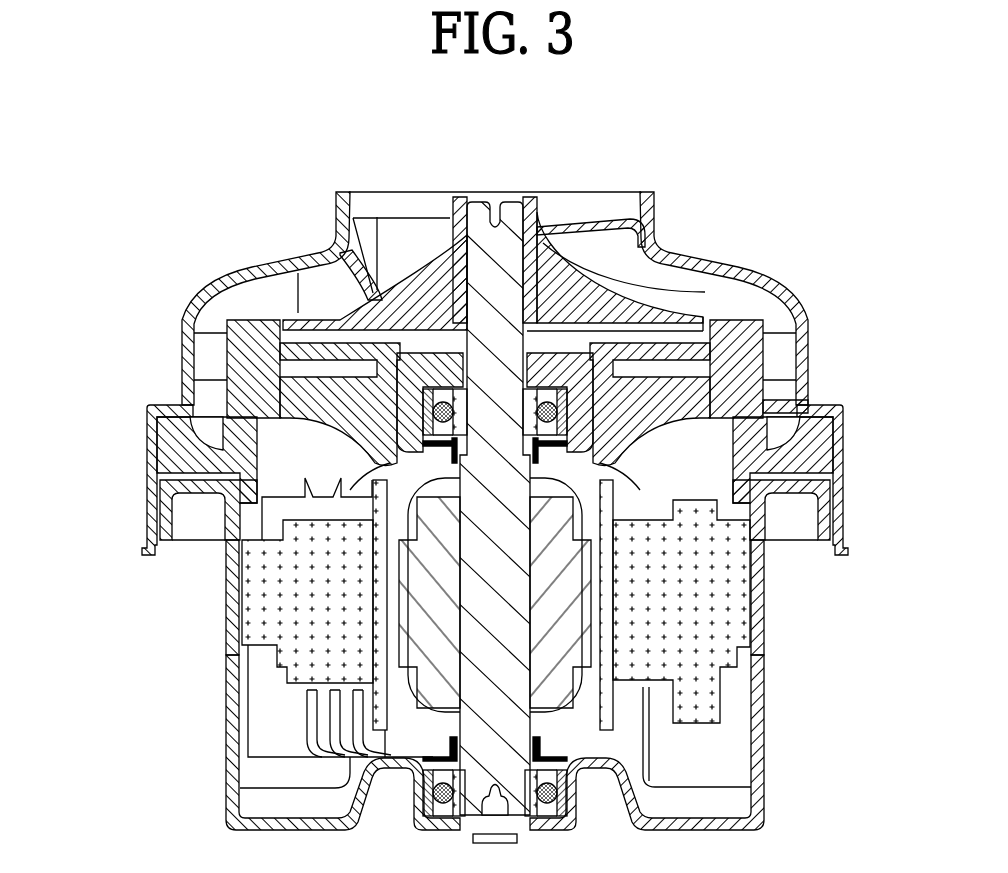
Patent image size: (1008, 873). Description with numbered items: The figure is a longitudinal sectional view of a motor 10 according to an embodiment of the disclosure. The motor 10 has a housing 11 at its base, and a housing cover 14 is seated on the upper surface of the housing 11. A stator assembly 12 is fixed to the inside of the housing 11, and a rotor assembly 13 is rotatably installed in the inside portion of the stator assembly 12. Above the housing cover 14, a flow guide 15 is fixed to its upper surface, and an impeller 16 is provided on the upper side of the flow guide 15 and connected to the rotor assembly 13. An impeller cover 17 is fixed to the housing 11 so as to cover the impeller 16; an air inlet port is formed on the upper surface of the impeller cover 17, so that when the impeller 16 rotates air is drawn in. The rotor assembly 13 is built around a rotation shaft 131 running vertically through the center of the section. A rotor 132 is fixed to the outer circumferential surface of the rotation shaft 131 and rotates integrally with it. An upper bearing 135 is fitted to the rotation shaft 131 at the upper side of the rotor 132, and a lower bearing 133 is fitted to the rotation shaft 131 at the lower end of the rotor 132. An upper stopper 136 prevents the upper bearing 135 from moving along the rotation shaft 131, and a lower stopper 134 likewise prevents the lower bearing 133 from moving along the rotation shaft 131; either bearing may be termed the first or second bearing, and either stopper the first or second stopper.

The motor 10 is at (816, 208).
The housing 11 is at (760, 730).
The stator assembly 12 is at (748, 597).
The rotor assembly 13 is at (72, 440).
The rotation shaft 131 is at (483, 551).
The rotor 132 is at (417, 598).
The lower bearing 133 is at (420, 790).
The lower stopper 134 is at (433, 753).
The upper bearing 135 is at (420, 412).
The upper stopper 136 is at (427, 450).
The housing cover 14 is at (830, 440).
The flow guide 15 is at (750, 354).
The impeller 16 is at (673, 303).
The impeller cover 17 is at (667, 250).